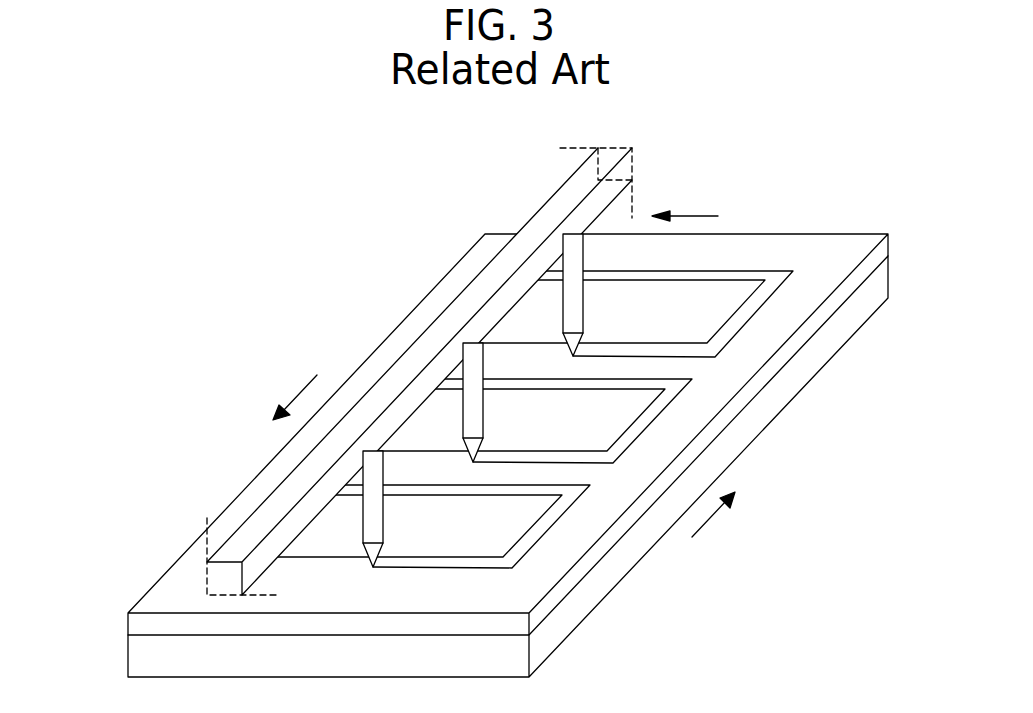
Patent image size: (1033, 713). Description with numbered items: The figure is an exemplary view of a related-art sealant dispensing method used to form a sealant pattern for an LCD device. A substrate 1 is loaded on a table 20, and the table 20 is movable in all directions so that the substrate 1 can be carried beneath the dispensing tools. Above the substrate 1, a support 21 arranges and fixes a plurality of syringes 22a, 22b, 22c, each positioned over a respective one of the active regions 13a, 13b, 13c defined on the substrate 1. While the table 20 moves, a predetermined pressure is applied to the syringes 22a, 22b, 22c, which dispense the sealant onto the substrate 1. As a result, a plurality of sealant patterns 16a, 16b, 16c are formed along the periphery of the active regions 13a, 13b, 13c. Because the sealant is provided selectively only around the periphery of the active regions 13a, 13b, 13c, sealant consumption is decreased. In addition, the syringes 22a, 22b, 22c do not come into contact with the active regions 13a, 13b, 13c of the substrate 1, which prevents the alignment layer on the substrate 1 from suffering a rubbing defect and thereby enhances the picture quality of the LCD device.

The substrate 1 is at (128, 623).
The table 20 is at (128, 657).
The support 21 is at (548, 208).
The syringe 22a is at (573, 298).
The syringe 22b is at (472, 408).
The syringe 22c is at (373, 512).
The active region 13a is at (735, 297).
The active region 13b is at (632, 404).
The active region 13c is at (530, 509).
The sealant pattern 16a is at (738, 332).
The sealant pattern 16b is at (637, 440).
The sealant pattern 16c is at (537, 545).